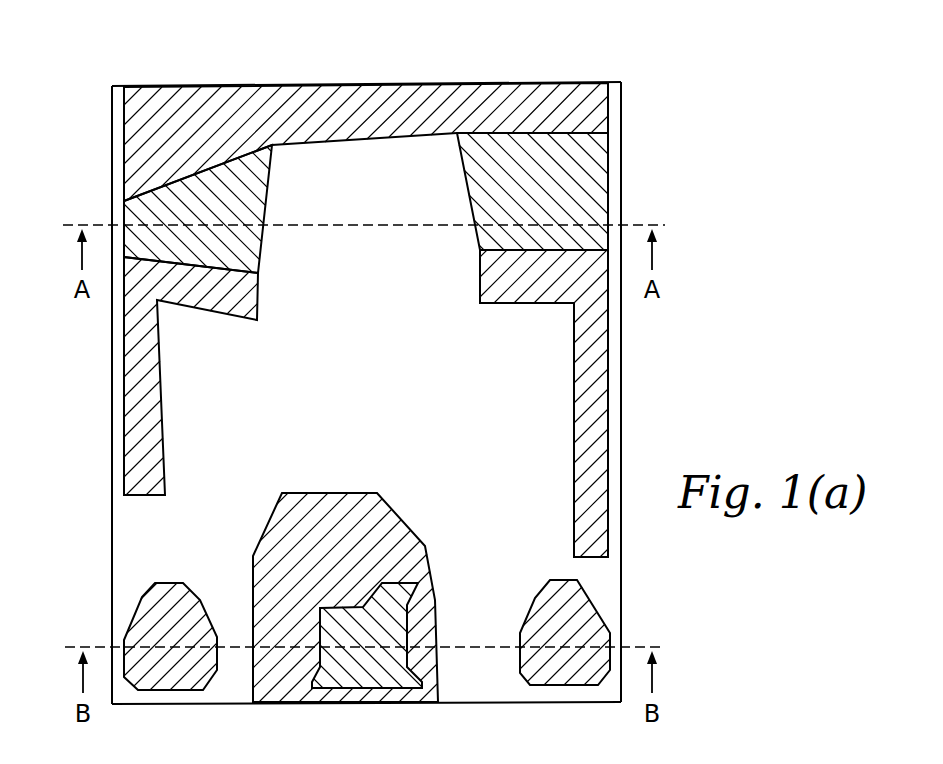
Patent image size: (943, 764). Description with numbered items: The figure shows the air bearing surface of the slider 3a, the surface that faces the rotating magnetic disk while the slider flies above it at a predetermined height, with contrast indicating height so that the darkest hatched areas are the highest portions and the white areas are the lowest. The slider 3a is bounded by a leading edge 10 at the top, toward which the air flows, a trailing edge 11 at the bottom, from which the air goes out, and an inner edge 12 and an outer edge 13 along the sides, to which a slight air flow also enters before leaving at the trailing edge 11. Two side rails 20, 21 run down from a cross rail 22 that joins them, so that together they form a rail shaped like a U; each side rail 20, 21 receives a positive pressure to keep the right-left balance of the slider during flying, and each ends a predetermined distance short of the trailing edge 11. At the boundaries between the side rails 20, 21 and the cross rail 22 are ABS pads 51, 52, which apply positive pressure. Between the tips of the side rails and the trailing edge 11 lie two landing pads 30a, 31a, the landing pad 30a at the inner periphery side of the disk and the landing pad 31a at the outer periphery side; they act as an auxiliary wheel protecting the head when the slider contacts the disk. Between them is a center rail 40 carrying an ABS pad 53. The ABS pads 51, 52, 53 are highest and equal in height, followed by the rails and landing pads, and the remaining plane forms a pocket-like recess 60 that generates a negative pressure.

The slider 3a is at (370, 375).
The leading edge 10 is at (366, 122).
The cross rail 22 is at (434, 97).
The ABS pad 51 is at (133, 213).
The ABS pad 52 is at (578, 177).
The side rail 20 is at (138, 383).
The side rail 21 is at (593, 378).
The inner edge 12 is at (112, 447).
The outer edge 13 is at (622, 442).
The trailing edge 11 is at (456, 705).
The recess 60 is at (140, 558).
The landing pad 30a is at (170, 678).
The landing pad 31a is at (562, 673).
The center rail 40 is at (275, 693).
The ABS pad 53 is at (363, 678).